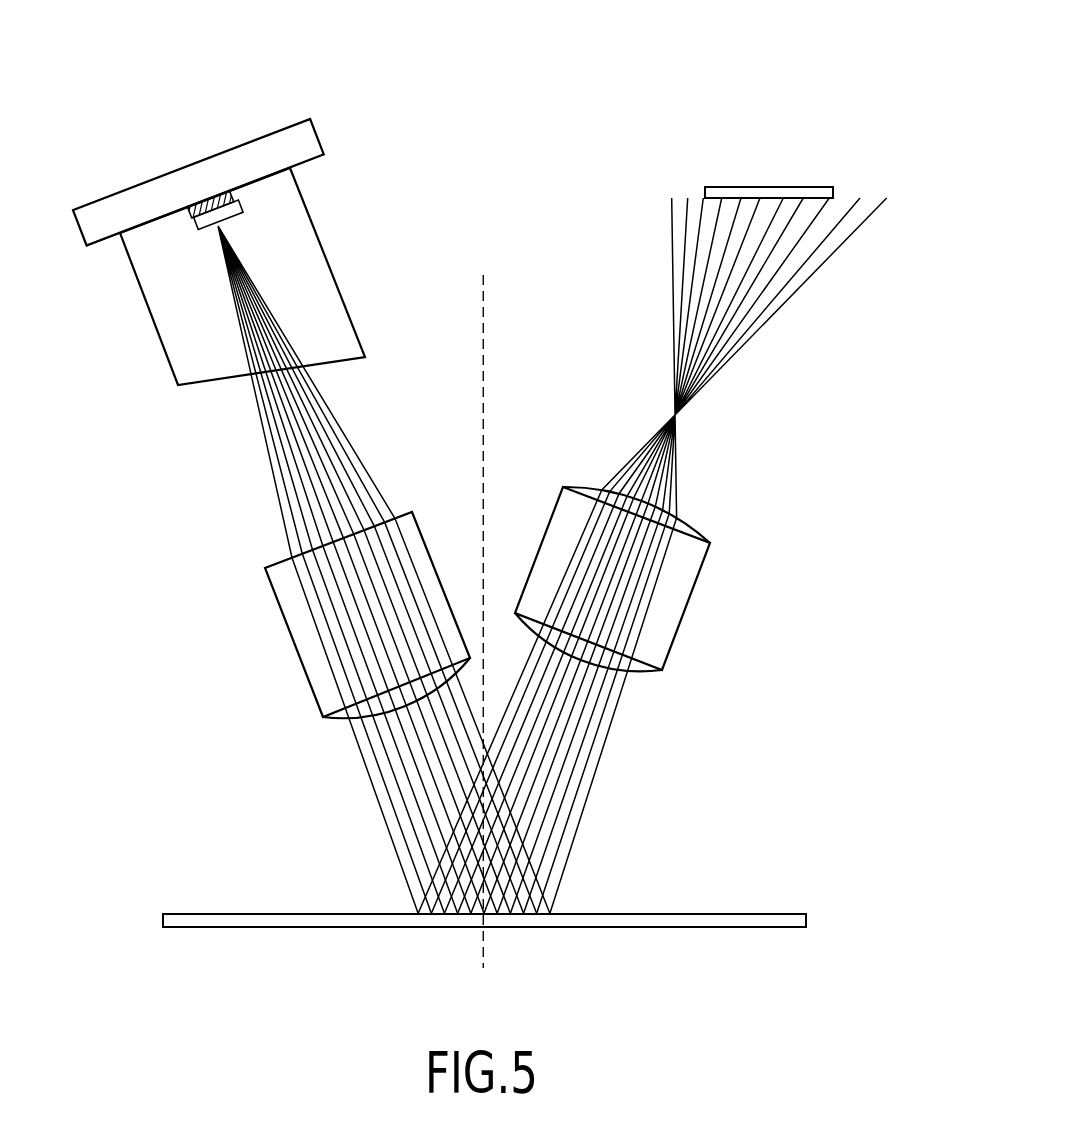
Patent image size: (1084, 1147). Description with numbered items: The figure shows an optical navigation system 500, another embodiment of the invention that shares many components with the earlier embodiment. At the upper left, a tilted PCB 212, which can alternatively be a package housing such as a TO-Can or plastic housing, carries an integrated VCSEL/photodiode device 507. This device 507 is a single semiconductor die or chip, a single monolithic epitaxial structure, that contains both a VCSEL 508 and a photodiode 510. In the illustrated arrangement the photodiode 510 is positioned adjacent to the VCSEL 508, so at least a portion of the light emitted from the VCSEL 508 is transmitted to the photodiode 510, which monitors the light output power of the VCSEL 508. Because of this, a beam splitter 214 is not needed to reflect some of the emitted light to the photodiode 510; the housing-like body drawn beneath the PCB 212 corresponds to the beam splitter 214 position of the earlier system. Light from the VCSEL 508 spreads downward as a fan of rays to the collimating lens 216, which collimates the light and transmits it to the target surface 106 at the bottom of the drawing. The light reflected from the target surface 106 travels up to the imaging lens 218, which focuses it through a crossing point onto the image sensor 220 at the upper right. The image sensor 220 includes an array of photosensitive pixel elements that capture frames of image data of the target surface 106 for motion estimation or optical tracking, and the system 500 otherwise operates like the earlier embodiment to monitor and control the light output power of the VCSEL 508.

The optical navigation system 500 is at (811, 42).
The printed circuit board (PCB) 212 is at (322, 134).
The photodiode 510 is at (236, 203).
The VCSEL 508 is at (229, 225).
The integrated VCSEL/photodiode device 507 is at (183, 238).
The beam splitter 214 is at (346, 360).
The collimating lens 216 is at (288, 632).
The imaging lens 218 is at (690, 600).
The image sensor 220 is at (774, 186).
The target surface 106 is at (693, 913).